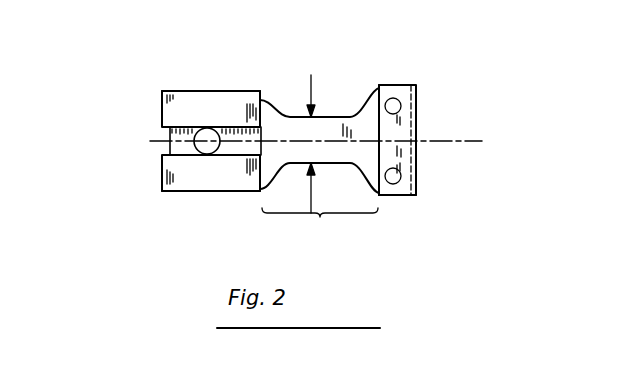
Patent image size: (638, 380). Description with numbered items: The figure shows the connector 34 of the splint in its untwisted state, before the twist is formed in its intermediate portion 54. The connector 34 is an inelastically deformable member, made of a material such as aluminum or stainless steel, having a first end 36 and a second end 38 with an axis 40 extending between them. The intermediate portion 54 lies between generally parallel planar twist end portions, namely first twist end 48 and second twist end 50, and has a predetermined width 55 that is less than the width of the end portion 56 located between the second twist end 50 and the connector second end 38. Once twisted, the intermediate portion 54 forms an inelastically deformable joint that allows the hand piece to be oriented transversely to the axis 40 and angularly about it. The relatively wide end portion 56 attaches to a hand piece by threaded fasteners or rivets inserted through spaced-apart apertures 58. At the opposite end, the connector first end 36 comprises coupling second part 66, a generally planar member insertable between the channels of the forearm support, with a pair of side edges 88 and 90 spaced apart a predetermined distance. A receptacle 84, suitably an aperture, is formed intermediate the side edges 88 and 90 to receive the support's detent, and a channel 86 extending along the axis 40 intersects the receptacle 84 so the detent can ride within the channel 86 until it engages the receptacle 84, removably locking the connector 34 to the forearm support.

The connector 34 is at (345, 65).
The first end 36 is at (162, 105).
The second end 38 is at (416, 102).
The axis 40 is at (468, 138).
The first twist end 48 is at (262, 110).
The second twist end 50 is at (380, 107).
The intermediate portion 54 is at (320, 227).
The width 55 is at (312, 200).
The end portion 56 is at (425, 209).
The apertures 58 is at (397, 112).
The coupling second part 66 is at (201, 194).
The receptacle 84 is at (213, 127).
The channel 86 is at (171, 152).
The side edge 88 is at (175, 192).
The side edge 90 is at (182, 91).